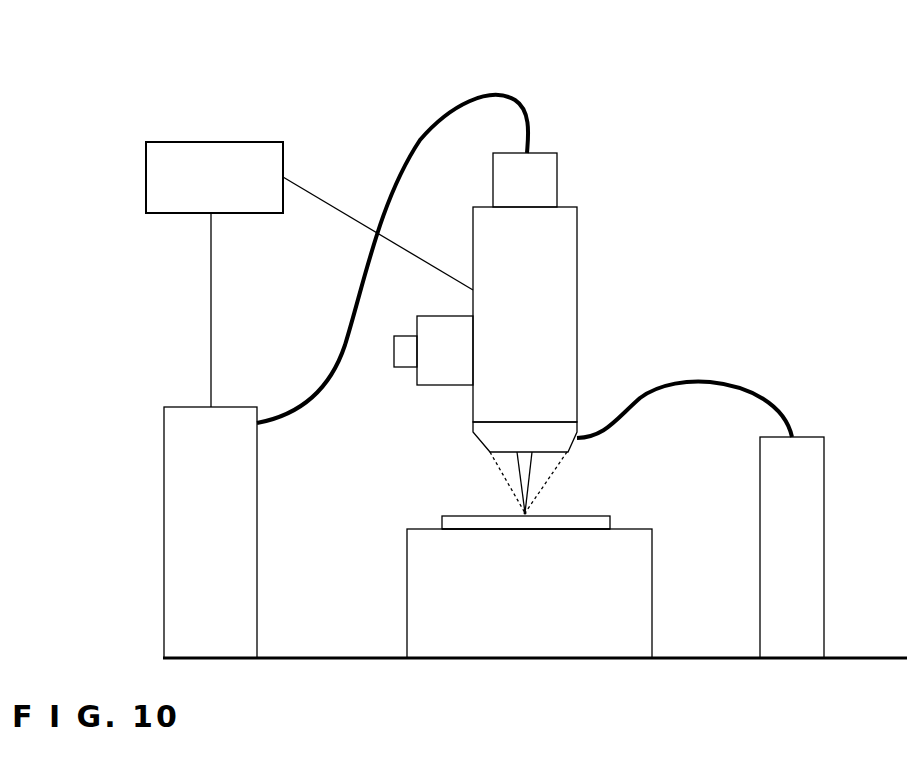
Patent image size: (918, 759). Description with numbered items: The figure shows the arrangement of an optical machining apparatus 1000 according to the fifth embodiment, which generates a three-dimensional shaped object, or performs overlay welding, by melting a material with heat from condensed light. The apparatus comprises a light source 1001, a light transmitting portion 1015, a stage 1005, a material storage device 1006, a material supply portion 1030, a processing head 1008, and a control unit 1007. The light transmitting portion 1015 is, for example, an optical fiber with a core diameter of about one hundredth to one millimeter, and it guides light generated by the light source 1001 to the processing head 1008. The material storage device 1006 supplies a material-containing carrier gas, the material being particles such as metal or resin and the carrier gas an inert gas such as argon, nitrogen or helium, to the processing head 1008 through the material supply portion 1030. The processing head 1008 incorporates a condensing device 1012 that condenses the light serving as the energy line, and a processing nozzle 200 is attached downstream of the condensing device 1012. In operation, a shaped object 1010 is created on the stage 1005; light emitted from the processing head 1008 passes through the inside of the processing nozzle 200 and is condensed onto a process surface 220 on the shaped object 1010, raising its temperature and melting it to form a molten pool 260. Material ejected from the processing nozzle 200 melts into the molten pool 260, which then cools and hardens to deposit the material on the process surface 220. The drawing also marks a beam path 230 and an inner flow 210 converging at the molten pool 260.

The optical machining apparatus 1000 is at (132, 96).
The control unit 1007 is at (156, 175).
The light source 1001 is at (184, 412).
The light transmitting portion 1015 is at (392, 172).
The condensing device 1012 is at (538, 153).
The processing head 1008 is at (563, 235).
The processing nozzle 200 is at (487, 435).
The laser beam 230 is at (505, 483).
The assist gas flow 210 is at (528, 470).
The molten pool 260 is at (528, 513).
The process surface 220 is at (448, 516).
The shaped object 1010 is at (568, 522).
The stage 1005 is at (447, 647).
The material supply portion 1030 is at (713, 384).
The material storage device 1006 is at (800, 647).